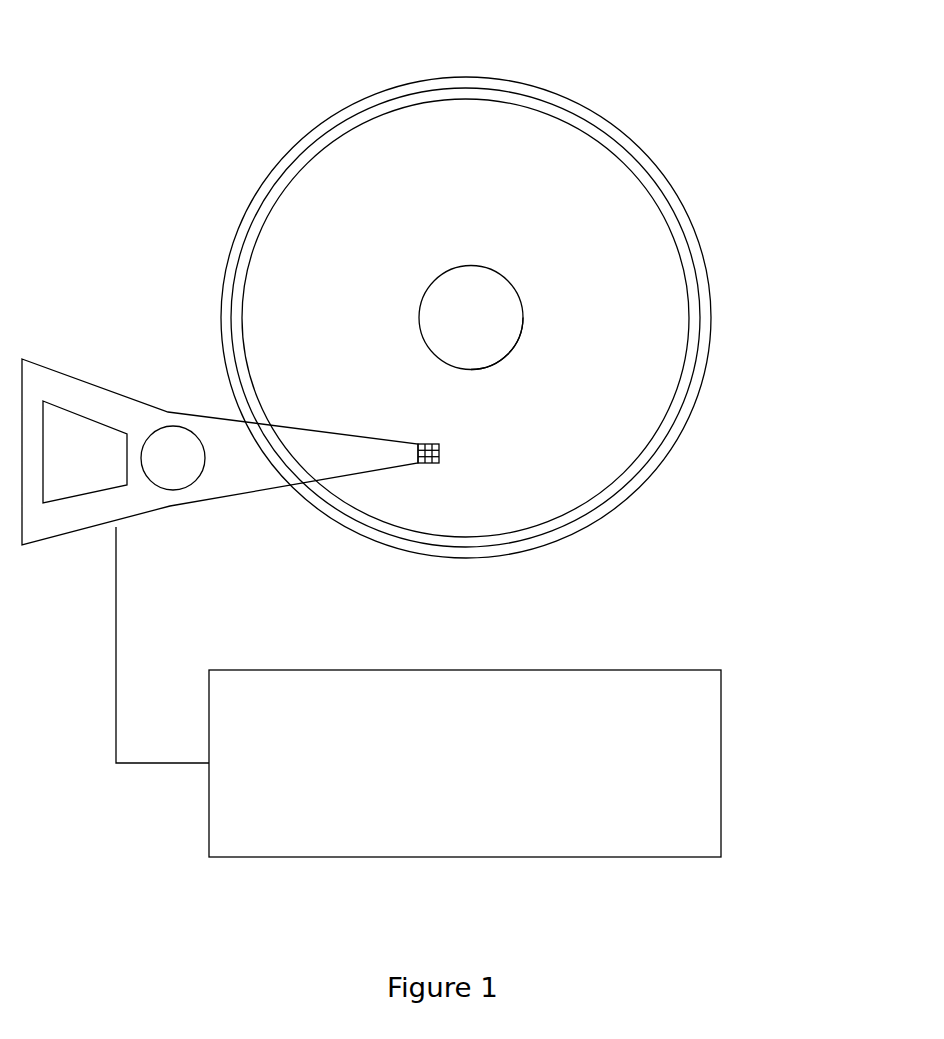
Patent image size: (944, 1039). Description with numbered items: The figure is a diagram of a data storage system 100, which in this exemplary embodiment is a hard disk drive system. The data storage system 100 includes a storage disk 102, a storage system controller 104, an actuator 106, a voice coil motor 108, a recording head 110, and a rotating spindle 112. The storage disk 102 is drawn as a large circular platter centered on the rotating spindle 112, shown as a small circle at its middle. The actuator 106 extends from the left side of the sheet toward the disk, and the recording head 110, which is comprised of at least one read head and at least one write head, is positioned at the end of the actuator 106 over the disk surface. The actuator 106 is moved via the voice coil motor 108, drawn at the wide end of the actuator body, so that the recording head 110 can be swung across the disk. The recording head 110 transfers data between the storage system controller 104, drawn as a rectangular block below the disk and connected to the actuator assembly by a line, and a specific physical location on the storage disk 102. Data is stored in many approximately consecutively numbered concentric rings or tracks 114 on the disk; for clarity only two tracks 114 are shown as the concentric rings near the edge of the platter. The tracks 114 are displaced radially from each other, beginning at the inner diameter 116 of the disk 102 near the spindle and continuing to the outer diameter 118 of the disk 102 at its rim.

The data storage system 100 is at (222, 98).
The storage disk 102 is at (597, 108).
The storage system controller 104 is at (731, 742).
The actuator 106 is at (327, 443).
The voice coil motor 108 is at (89, 510).
The recording head 110 is at (445, 453).
The rotating spindle 112 is at (515, 283).
The tracks 114 is at (670, 202).
The inner diameter 116 is at (512, 358).
The outer diameter 118 is at (633, 507).